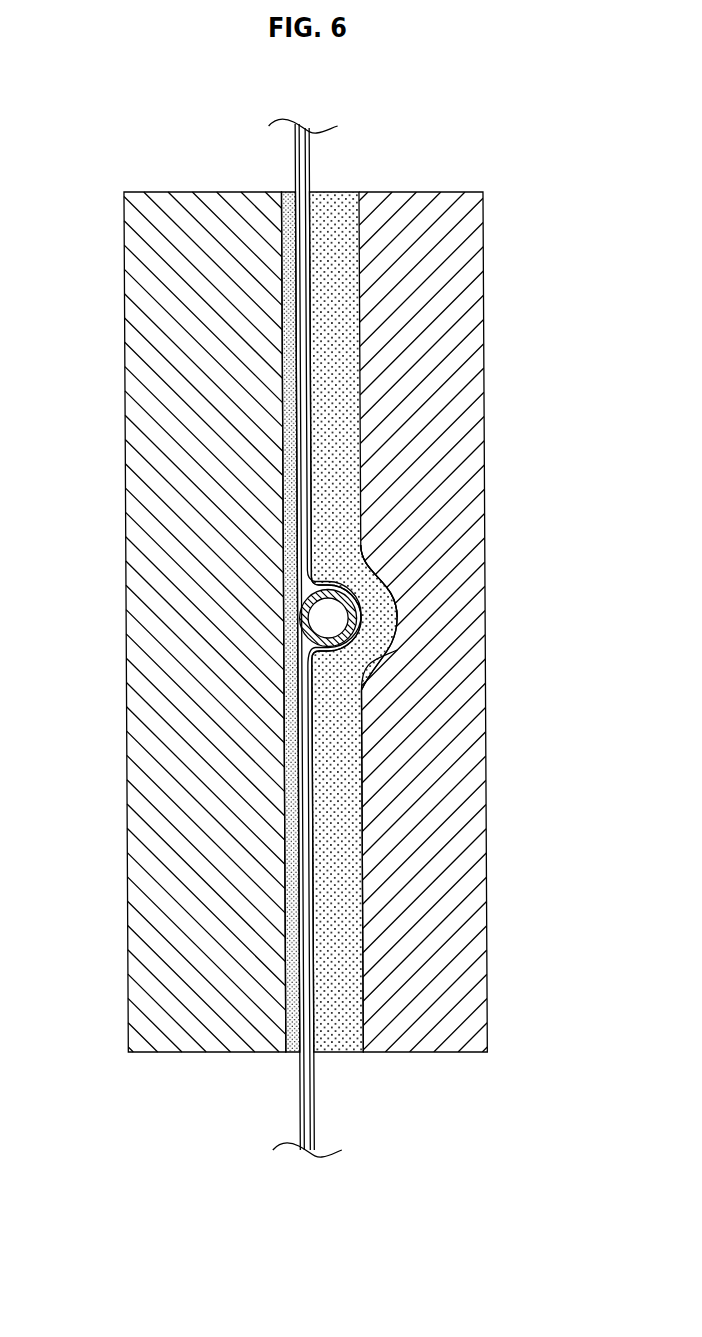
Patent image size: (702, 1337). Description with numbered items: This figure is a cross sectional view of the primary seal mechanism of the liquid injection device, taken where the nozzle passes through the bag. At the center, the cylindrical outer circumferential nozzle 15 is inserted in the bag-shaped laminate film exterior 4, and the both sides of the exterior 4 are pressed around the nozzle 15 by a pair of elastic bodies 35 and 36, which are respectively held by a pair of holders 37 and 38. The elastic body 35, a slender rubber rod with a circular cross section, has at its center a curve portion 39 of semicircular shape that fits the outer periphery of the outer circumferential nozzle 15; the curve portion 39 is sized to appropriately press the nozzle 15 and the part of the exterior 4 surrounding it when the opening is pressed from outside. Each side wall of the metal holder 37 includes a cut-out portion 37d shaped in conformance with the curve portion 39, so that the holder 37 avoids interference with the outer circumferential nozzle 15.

The bag-shaped laminate film exterior 4 is at (308, 167).
The outer circumferential nozzle 15 is at (349, 608).
The elastic body 35 is at (337, 202).
The elastic body 36 is at (288, 192).
The holder 37 is at (471, 230).
The cut-out portion 37d is at (374, 647).
The holder 38 is at (147, 246).
The curve portion 39 is at (314, 649).